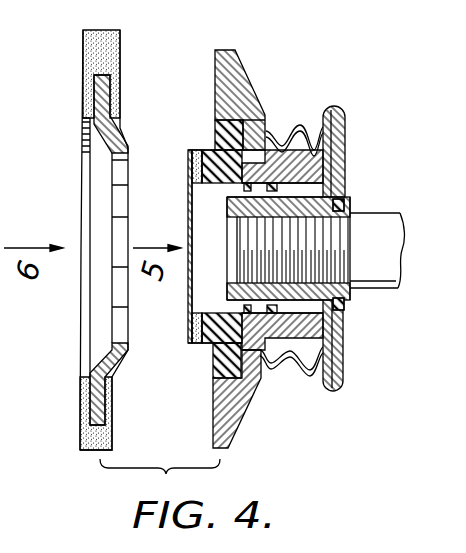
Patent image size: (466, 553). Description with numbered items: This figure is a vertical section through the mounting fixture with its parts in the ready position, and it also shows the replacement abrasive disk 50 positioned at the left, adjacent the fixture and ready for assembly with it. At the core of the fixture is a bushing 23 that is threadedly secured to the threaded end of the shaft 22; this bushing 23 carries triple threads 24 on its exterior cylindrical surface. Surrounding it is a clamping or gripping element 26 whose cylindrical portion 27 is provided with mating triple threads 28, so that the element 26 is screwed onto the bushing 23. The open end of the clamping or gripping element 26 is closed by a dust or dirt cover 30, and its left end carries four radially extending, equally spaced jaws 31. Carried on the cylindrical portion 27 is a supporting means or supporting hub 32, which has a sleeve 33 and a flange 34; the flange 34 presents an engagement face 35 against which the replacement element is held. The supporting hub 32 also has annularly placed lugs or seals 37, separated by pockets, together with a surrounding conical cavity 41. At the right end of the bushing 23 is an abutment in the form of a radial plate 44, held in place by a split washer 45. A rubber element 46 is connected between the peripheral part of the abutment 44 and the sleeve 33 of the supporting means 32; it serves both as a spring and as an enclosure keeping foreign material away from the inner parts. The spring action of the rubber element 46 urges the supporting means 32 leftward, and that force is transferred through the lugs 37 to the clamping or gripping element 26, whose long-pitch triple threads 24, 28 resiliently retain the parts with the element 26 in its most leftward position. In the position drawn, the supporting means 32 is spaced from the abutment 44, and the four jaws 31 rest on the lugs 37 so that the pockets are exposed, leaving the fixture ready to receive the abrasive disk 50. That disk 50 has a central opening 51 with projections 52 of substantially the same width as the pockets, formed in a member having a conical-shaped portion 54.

The shaft 22 is at (377, 226).
The bushing 23 is at (347, 213).
The triple threads 24 is at (300, 192).
The clamping or gripping element 26 is at (210, 190).
The cylindrical portion 27 is at (240, 186).
The triple threads 28 is at (233, 228).
The dust or dirt cover 30 is at (190, 292).
The jaws 31 is at (191, 172).
The supporting means or supporting hub 32 is at (244, 103).
The sleeve 33 is at (263, 147).
The flange 34 is at (236, 62).
The engagement face 35 is at (214, 92).
The lugs or seals 37 is at (196, 157).
The conical cavity 41 is at (203, 148).
The radial plate 44 is at (321, 341).
The split washer 45 is at (341, 308).
The rubber element 46 is at (306, 122).
The abrasive disk 50 is at (82, 420).
The central opening 51 is at (112, 285).
The projections 52 is at (112, 191).
The conical-shaped portion 54 is at (83, 160).